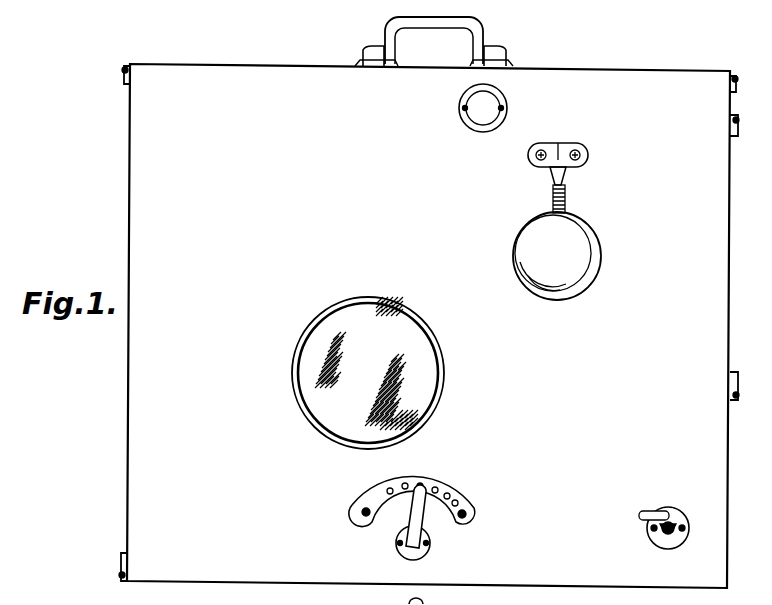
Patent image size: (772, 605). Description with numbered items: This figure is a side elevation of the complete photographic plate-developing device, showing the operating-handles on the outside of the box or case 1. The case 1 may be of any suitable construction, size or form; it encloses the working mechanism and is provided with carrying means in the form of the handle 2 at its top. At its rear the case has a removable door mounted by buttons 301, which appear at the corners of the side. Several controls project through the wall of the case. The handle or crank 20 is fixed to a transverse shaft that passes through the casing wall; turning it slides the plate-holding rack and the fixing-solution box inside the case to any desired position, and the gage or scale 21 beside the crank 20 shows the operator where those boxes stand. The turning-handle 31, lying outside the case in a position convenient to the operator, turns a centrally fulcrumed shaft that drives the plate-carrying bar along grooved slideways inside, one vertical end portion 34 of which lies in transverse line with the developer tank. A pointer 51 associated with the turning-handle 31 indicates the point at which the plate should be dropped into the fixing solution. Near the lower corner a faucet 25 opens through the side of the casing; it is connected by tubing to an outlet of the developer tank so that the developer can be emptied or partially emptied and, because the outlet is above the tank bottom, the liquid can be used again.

The box or case 1 is at (428, 326).
The handle 2 is at (484, 25).
The handle or crank 20 is at (408, 520).
The gage or scale 21 is at (368, 495).
The faucet 25 is at (673, 517).
The turning-handle 31 is at (557, 256).
The vertical end portion of slideway 34 is at (478, 113).
The pointer 51 is at (568, 189).
The buttons 301 is at (408, 323).